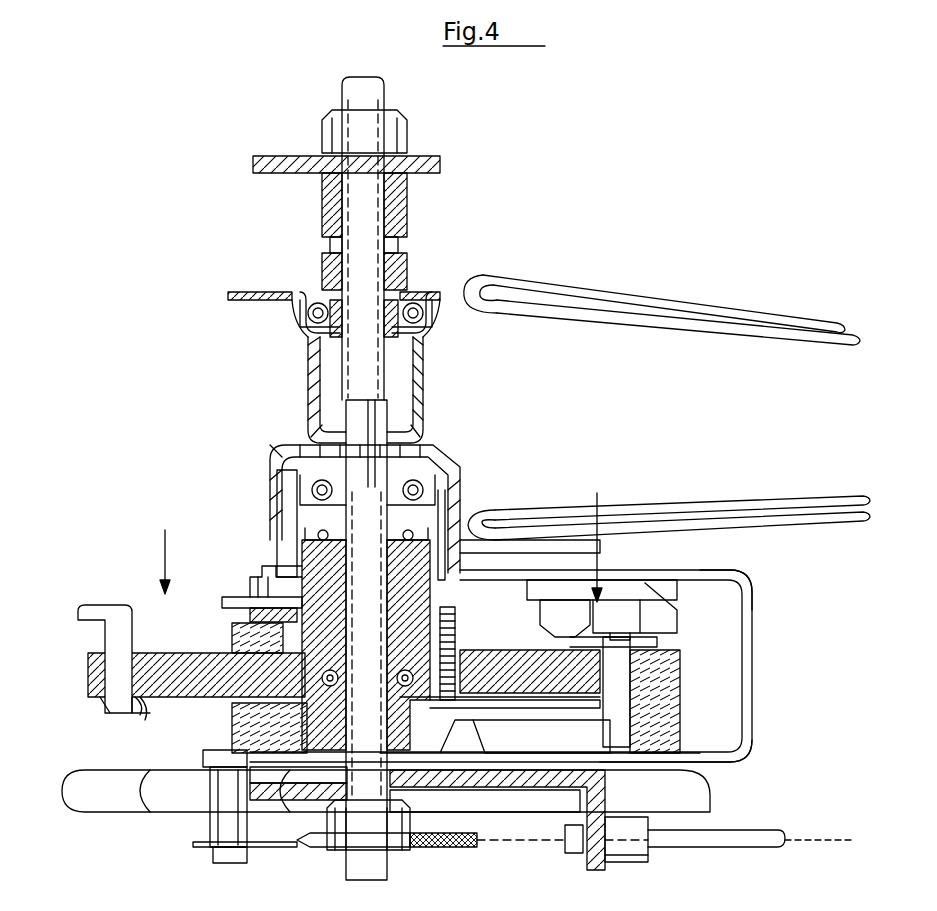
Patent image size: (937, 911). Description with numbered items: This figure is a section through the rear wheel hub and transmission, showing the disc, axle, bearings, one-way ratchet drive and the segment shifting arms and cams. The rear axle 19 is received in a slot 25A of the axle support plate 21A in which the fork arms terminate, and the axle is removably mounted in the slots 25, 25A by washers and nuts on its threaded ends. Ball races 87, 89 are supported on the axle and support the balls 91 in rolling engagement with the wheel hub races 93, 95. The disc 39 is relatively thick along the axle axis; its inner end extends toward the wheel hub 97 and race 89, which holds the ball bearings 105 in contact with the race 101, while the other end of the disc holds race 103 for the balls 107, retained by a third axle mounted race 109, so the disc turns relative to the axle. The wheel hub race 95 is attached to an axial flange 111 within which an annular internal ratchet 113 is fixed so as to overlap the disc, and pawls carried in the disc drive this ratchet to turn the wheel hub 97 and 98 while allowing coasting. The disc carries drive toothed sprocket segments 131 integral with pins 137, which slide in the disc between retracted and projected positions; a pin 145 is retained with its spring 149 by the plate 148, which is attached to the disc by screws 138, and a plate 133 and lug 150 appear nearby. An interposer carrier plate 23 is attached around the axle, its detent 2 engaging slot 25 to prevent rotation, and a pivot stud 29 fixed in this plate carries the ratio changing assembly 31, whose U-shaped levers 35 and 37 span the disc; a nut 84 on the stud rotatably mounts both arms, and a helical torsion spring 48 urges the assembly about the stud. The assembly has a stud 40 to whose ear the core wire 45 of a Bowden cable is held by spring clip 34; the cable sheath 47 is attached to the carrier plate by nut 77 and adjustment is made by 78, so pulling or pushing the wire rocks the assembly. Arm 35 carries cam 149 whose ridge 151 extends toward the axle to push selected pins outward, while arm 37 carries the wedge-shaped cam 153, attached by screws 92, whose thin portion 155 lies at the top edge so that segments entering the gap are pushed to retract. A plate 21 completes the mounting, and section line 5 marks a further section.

The rear axle 19 is at (360, 84).
The axle support plate 21A is at (288, 158).
The slot 25A is at (432, 163).
The ball race 87 is at (407, 262).
The wheel hub race 93 is at (300, 335).
The balls 91 is at (432, 330).
The wheel hub 98 is at (424, 386).
The axial flange 111 is at (277, 497).
The ball bearings 105 is at (318, 532).
The wheel hub race 95 is at (450, 487).
The wheel hub 97 is at (462, 500).
The ball race 89 is at (419, 509).
The section line 5 is at (379, 533).
The pivot stud 29 is at (262, 565).
The nut 84 is at (212, 572).
The plate 133 is at (224, 603).
The helical torsion spring 48 is at (232, 637).
The drive toothed sprocket segments 131 is at (95, 605).
The disc 39 is at (90, 668).
The pins 137 is at (105, 705).
The pin 145 is at (140, 700).
The plate 148 is at (230, 705).
The lug 150 is at (138, 732).
The interposer carrier plate 23 is at (85, 775).
The lever 35 is at (727, 760).
The spring clip 34 is at (205, 846).
The stud 40 is at (224, 863).
The plate 21 is at (297, 800).
The detent 2 is at (440, 788).
The core wire adjustment 78 is at (425, 847).
The core wire 45 is at (500, 847).
The slot 25 is at (490, 798).
The nut 77 is at (625, 862).
The cable sheath 47 is at (727, 838).
The race 101 is at (470, 548).
The annular internal ratchet 113 is at (597, 558).
The wedge-shaped cam 153 is at (625, 580).
The lever 37 is at (715, 572).
The ratio changing assembly 31 is at (752, 586).
The screws 92 is at (580, 625).
The thin portion 155 is at (613, 626).
The race 103 is at (456, 632).
The balls 107 is at (456, 647).
The axle mounted race 109 is at (400, 718).
The screws 138 is at (455, 712).
The ridge 151 is at (482, 718).
The cam 149 is at (472, 745).